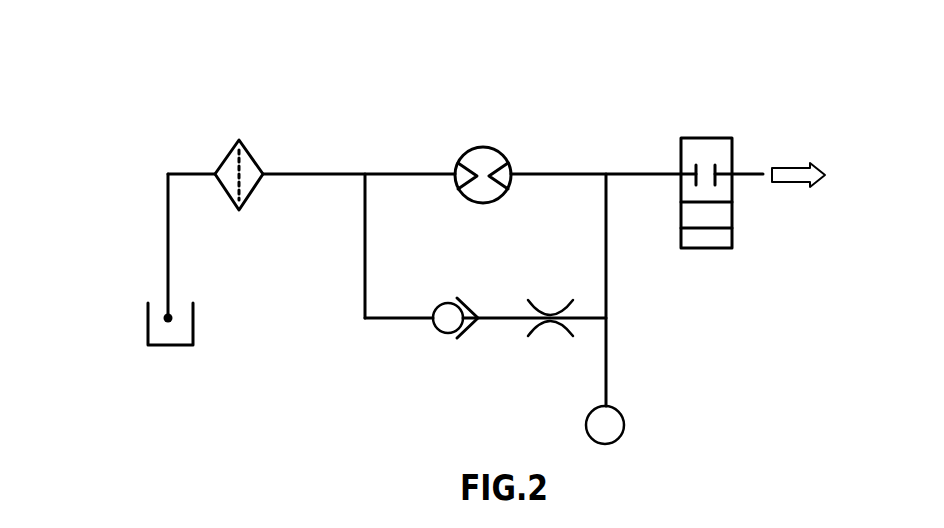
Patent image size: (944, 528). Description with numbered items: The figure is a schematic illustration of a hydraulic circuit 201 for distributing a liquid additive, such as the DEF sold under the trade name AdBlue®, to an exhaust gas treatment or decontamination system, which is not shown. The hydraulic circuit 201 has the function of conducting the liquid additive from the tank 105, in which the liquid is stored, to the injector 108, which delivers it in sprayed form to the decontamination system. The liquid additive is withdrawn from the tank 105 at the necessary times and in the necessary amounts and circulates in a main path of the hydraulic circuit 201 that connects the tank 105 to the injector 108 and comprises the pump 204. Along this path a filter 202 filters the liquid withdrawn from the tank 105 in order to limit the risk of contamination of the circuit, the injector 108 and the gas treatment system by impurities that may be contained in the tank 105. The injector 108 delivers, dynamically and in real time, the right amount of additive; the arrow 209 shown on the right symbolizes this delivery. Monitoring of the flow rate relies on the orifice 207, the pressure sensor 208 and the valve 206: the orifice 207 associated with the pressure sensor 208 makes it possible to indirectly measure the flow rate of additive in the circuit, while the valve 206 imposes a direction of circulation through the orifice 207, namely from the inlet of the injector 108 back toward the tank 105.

The hydraulic circuit 201 is at (595, 70).
The tank 105 is at (147, 328).
The filter 202 is at (252, 150).
The pump 204 is at (498, 152).
The injector 108 is at (712, 138).
The arrow 209 is at (792, 166).
The valve 206 is at (440, 333).
The orifice 207 is at (538, 328).
The pressure sensor 208 is at (624, 426).